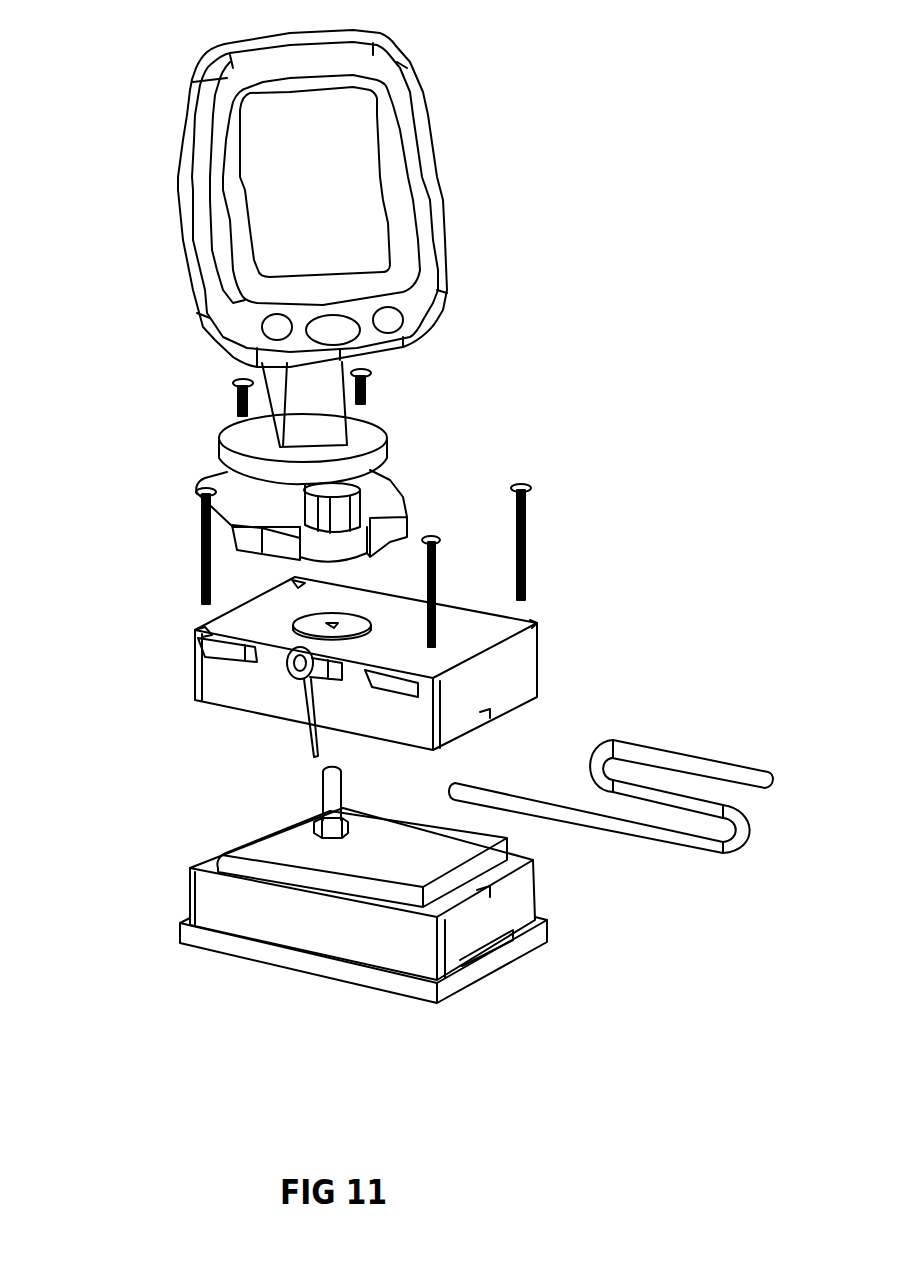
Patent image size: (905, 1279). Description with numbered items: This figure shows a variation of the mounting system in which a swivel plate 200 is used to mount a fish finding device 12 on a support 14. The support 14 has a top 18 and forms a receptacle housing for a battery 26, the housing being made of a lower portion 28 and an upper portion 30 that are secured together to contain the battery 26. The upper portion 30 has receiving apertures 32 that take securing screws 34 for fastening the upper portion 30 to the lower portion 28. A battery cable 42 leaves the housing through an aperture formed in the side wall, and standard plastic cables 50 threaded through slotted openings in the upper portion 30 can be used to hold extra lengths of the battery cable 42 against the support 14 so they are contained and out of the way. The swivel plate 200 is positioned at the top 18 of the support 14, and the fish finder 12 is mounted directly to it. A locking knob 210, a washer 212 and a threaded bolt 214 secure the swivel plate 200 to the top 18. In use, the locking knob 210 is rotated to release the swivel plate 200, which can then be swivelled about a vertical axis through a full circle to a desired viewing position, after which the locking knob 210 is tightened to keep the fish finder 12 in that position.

The fish finding device 12 is at (232, 79).
The support 14 is at (527, 662).
The top 18 is at (215, 630).
The battery 26 is at (303, 853).
The lower portion 28 is at (260, 923).
The upper portion 30 is at (207, 685).
The receiving apertures 32 is at (205, 632).
The securing screws 34 is at (200, 547).
The battery cable 42 is at (658, 758).
The standard plastic cable 50 is at (290, 677).
The swivel plate 200 is at (390, 485).
The locking knob 210 is at (196, 455).
The washer 212 is at (358, 620).
The threaded bolt 214 is at (322, 789).